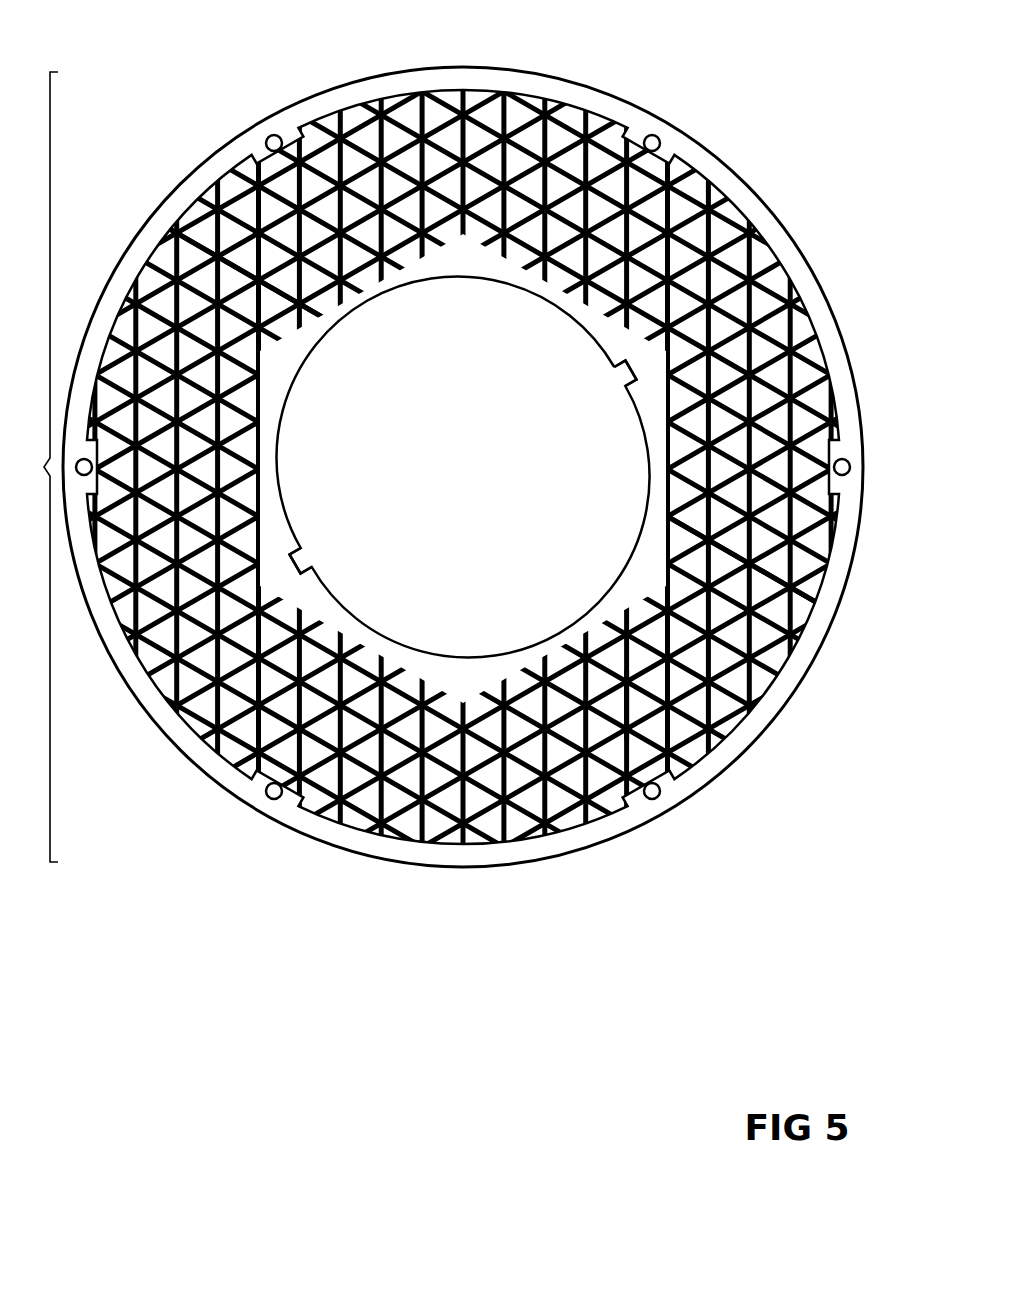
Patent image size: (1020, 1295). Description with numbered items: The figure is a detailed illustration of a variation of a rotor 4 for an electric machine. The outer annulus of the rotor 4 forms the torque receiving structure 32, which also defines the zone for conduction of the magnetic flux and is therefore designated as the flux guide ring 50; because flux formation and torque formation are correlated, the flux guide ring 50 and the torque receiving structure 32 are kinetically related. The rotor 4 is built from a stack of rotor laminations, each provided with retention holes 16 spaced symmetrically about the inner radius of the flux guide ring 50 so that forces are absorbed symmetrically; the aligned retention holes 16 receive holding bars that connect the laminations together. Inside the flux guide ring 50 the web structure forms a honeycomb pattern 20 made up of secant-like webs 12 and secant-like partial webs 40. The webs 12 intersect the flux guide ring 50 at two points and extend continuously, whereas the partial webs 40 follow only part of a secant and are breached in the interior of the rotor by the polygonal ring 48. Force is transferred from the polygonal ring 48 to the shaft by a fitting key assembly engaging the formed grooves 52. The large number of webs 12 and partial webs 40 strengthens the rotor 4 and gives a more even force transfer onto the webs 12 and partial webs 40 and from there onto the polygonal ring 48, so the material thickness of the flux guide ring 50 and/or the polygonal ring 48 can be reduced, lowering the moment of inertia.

The rotor 4 is at (35, 467).
The secant-like webs 12 is at (713, 655).
The retention holes 16 is at (661, 141).
The honeycomb pattern 20 is at (266, 258).
The torque receiving structure 32 is at (480, 74).
The secant-like partial webs 40 is at (643, 697).
The polygonal ring 48 is at (474, 272).
The flux guide ring 50 is at (790, 247).
The grooves 52 is at (622, 375).